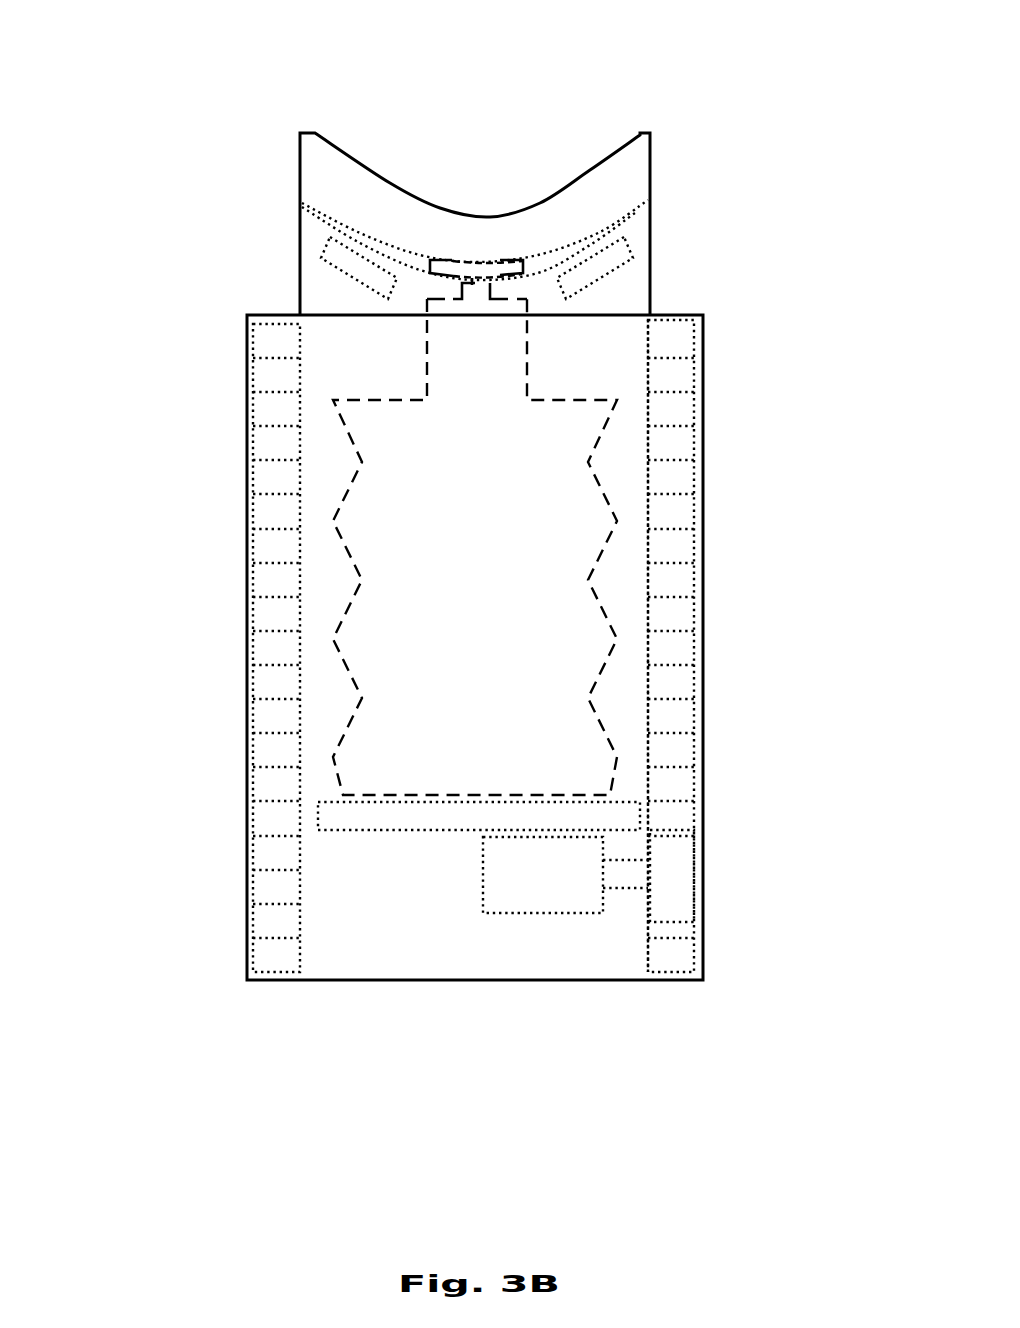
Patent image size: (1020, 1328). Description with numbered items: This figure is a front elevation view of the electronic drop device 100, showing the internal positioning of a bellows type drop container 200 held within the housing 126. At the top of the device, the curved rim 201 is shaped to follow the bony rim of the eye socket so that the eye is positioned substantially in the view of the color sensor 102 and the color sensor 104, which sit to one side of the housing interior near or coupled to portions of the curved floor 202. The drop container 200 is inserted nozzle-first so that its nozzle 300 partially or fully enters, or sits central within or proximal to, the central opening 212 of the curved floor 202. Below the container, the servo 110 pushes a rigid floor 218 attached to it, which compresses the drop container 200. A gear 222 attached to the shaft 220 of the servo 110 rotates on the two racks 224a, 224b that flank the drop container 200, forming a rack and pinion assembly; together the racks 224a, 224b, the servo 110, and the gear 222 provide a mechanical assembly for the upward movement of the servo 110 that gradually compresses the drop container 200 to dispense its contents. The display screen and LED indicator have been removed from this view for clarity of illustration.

The electronic drop device 100 is at (62, 86).
The color sensor 102 is at (630, 248).
The color sensor 104 is at (343, 262).
The servo 110 is at (533, 897).
The housing 126 is at (673, 675).
The drop container 200 is at (580, 515).
The curved rim 201 is at (645, 133).
The curved floor 202 is at (630, 215).
The central opening 212 is at (505, 262).
The rigid floor 218 is at (393, 818).
The shaft 220 is at (623, 875).
The gear 222 is at (673, 897).
The rack 224a is at (673, 413).
The rack 224b is at (278, 616).
The nozzle 300 is at (472, 285).